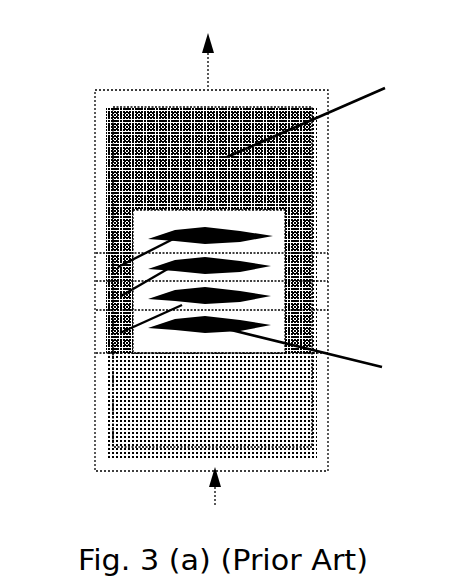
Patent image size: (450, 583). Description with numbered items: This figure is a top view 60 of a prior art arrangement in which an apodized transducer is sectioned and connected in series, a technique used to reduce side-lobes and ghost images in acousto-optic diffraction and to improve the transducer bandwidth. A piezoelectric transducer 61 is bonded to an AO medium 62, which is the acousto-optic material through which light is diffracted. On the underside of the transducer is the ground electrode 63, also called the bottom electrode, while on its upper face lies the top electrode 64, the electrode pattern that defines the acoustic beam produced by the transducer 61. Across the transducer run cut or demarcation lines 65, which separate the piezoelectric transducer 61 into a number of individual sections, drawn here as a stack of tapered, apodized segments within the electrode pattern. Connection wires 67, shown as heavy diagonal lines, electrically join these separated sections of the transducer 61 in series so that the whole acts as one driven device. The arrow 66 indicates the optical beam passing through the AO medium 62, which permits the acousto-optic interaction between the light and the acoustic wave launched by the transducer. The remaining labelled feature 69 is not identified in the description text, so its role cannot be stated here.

The top view 60 is at (226, 274).
The piezoelectric transducer 61 is at (143, 118).
The AO medium 62 is at (329, 153).
The ground electrode 63 is at (299, 442).
The top electrode 64 is at (232, 228).
The cut or demarcation lines 65 is at (330, 310).
The arrow 66 is at (236, 501).
The connection wires 67 is at (55, 325).
The intermediate layer 69 is at (255, 345).